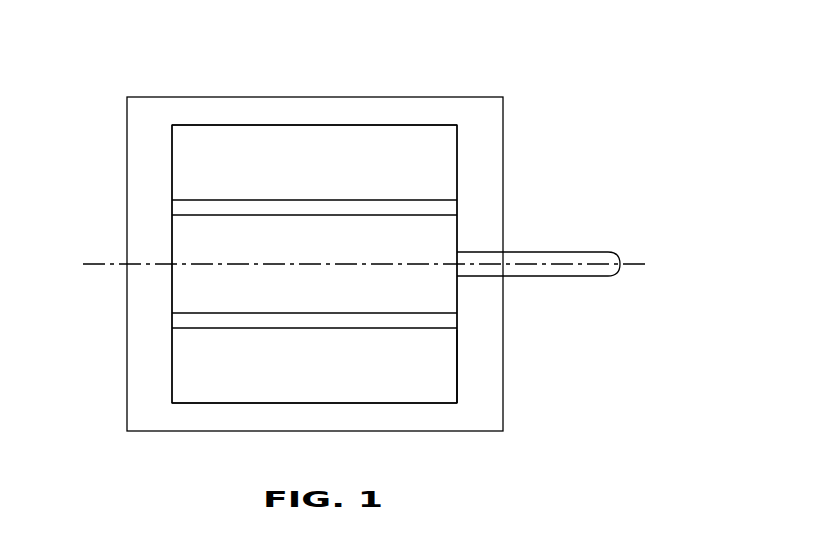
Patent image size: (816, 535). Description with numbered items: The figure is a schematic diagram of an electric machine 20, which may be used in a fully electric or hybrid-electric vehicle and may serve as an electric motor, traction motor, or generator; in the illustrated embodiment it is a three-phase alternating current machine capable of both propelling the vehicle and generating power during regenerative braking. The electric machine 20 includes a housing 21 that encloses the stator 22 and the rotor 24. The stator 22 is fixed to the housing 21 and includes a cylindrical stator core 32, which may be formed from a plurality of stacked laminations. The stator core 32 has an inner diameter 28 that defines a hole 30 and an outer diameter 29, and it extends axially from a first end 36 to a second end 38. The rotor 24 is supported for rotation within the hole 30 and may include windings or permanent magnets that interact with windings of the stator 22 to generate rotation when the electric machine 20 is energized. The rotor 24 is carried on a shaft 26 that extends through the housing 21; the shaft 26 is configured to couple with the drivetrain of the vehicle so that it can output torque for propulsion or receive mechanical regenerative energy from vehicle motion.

The electric machine 20 is at (494, 47).
The housing 21 is at (317, 97).
The stator 22 is at (225, 125).
The rotor 24 is at (170, 242).
The shaft 26 is at (545, 252).
The inner diameter 28 is at (437, 203).
The outer diameter 29 is at (228, 403).
The hole 30 is at (470, 318).
The stator core 32 is at (458, 162).
The first end 36 is at (170, 165).
The second end 38 is at (457, 362).